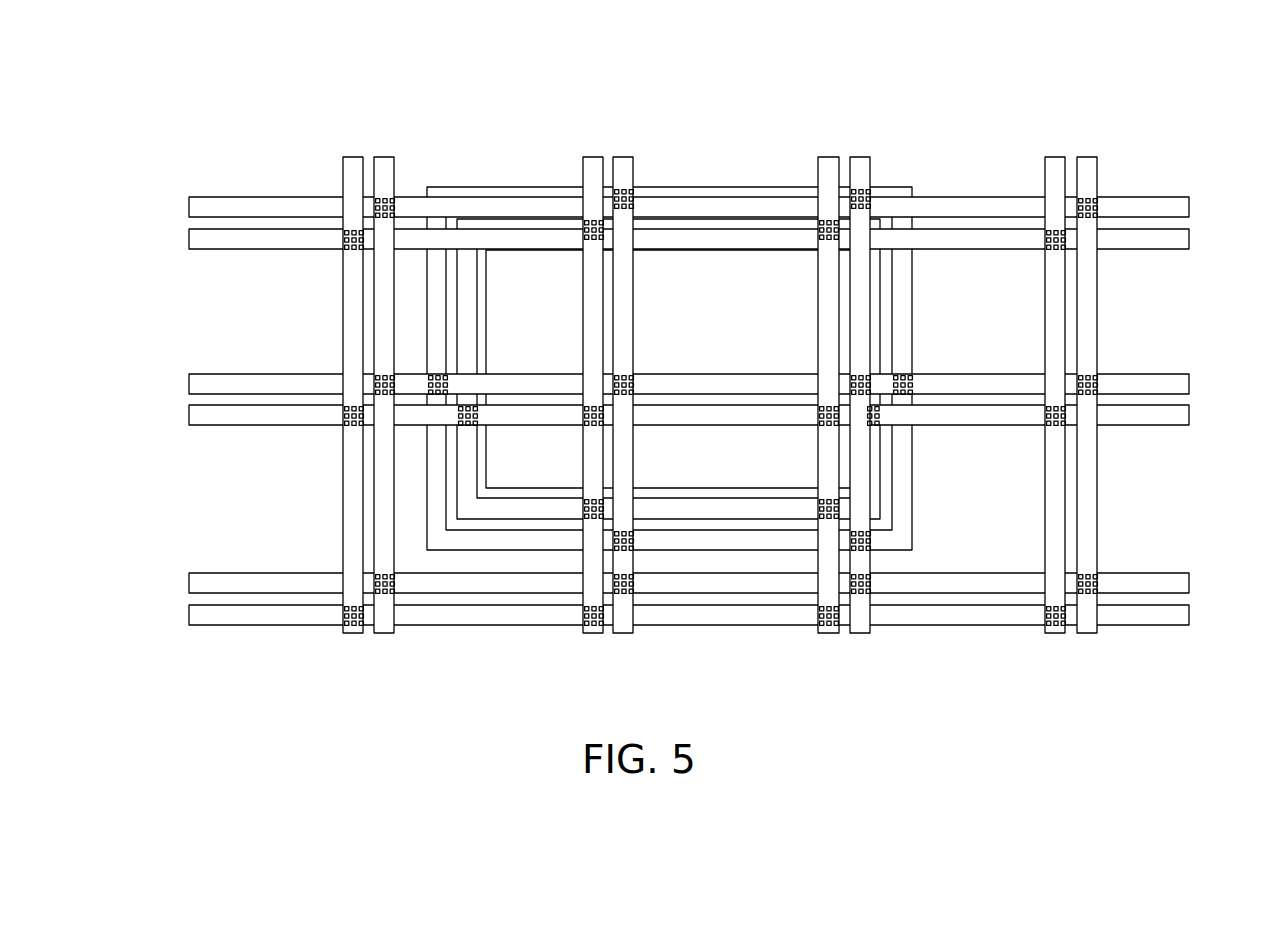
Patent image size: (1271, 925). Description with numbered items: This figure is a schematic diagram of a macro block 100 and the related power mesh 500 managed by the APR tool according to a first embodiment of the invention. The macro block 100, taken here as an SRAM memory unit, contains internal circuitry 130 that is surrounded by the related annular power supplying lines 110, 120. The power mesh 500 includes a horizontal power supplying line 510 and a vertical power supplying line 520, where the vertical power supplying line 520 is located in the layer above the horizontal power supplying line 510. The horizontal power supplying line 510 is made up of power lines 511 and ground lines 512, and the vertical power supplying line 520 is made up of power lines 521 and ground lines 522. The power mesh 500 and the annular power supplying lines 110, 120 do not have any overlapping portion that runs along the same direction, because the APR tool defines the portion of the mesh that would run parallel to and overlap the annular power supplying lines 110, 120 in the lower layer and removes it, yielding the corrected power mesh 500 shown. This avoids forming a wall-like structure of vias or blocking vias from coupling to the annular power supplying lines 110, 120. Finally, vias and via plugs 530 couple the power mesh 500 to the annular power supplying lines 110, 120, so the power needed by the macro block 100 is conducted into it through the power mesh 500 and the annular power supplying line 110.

The macro block 100 is at (714, 426).
The annular power supplying line 110 is at (900, 541).
The annular power supplying line 120 is at (735, 510).
The internal circuitry 130 is at (718, 353).
The power mesh 500 is at (658, 364).
The horizontal power supplying line 510 is at (658, 382).
The power line 511 is at (1165, 208).
The ground line 512 is at (1180, 247).
The vertical power supplying line 520 is at (729, 326).
The power line 521 is at (392, 158).
The ground line 522 is at (348, 158).
The via plug 530 is at (870, 197).